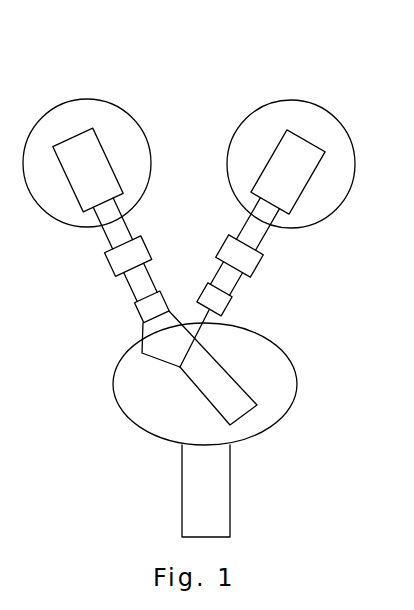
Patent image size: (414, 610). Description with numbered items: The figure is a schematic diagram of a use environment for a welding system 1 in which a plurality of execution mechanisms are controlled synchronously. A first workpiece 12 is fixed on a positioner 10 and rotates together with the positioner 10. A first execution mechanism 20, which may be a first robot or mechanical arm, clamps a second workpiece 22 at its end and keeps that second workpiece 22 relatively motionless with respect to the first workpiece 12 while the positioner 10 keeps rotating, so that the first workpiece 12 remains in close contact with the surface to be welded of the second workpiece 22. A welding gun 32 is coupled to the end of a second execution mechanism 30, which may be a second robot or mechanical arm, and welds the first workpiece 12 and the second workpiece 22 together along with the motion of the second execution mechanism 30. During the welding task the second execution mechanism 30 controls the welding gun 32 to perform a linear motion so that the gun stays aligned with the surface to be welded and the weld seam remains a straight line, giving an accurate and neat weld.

The welding system 1 is at (80, 42).
The positioner 10 is at (216, 470).
The first workpiece 12 is at (262, 402).
The first execution mechanism 20 is at (91, 191).
The second workpiece 22 is at (138, 332).
The second execution mechanism 30 is at (286, 198).
The welding gun 32 is at (214, 332).